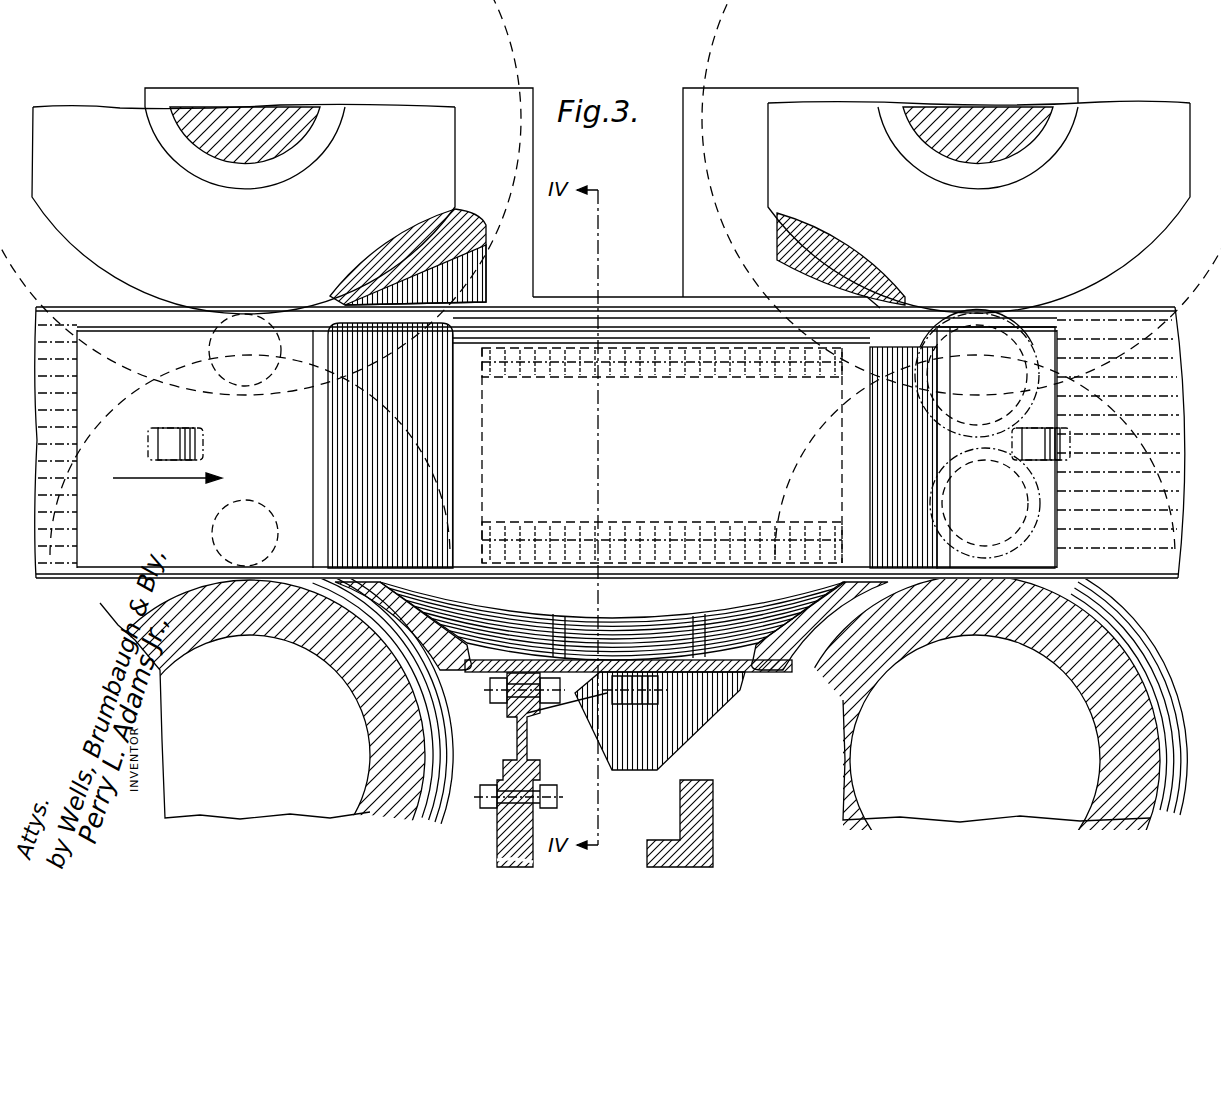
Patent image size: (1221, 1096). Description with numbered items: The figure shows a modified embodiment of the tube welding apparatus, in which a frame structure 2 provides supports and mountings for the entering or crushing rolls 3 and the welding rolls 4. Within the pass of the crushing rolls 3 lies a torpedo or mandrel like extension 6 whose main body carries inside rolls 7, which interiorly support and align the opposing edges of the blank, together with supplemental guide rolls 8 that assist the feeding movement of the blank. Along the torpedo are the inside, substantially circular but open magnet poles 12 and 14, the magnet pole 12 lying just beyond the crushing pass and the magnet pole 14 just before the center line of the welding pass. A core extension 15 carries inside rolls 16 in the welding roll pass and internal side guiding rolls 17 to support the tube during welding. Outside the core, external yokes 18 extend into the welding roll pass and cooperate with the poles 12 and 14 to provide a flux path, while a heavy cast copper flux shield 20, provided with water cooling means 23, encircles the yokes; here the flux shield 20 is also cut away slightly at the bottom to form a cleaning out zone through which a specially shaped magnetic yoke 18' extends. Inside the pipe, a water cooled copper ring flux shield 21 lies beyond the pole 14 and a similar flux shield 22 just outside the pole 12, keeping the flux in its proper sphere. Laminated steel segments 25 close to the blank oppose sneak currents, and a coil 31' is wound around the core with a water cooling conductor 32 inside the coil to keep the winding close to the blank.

The frame structure 2 is at (502, 840).
The entering or crushing rolls 3 is at (448, 145).
The welding rolls 4 is at (773, 147).
The torpedo or mandrel like extension 6 is at (92, 510).
The inside rolls 7 is at (212, 350).
The supplemental guide rolls 8 is at (190, 445).
The magnet pole 12 is at (348, 415).
The magnet pole 14 is at (930, 361).
The core extension 15 is at (1050, 507).
The inside rolls 16 is at (976, 315).
The internal side guiding rolls 17 is at (1060, 455).
The external yokes 18 is at (612, 626).
The magnetic yoke 18' is at (660, 721).
The flux shield 20 is at (580, 720).
The flux shield 21 is at (945, 497).
The flux shield 22 is at (318, 470).
The water cooling means 23 is at (466, 215).
The laminated steel segments 25 is at (455, 275).
The coil 31' is at (662, 525).
The water cooling conductor 32 is at (698, 370).